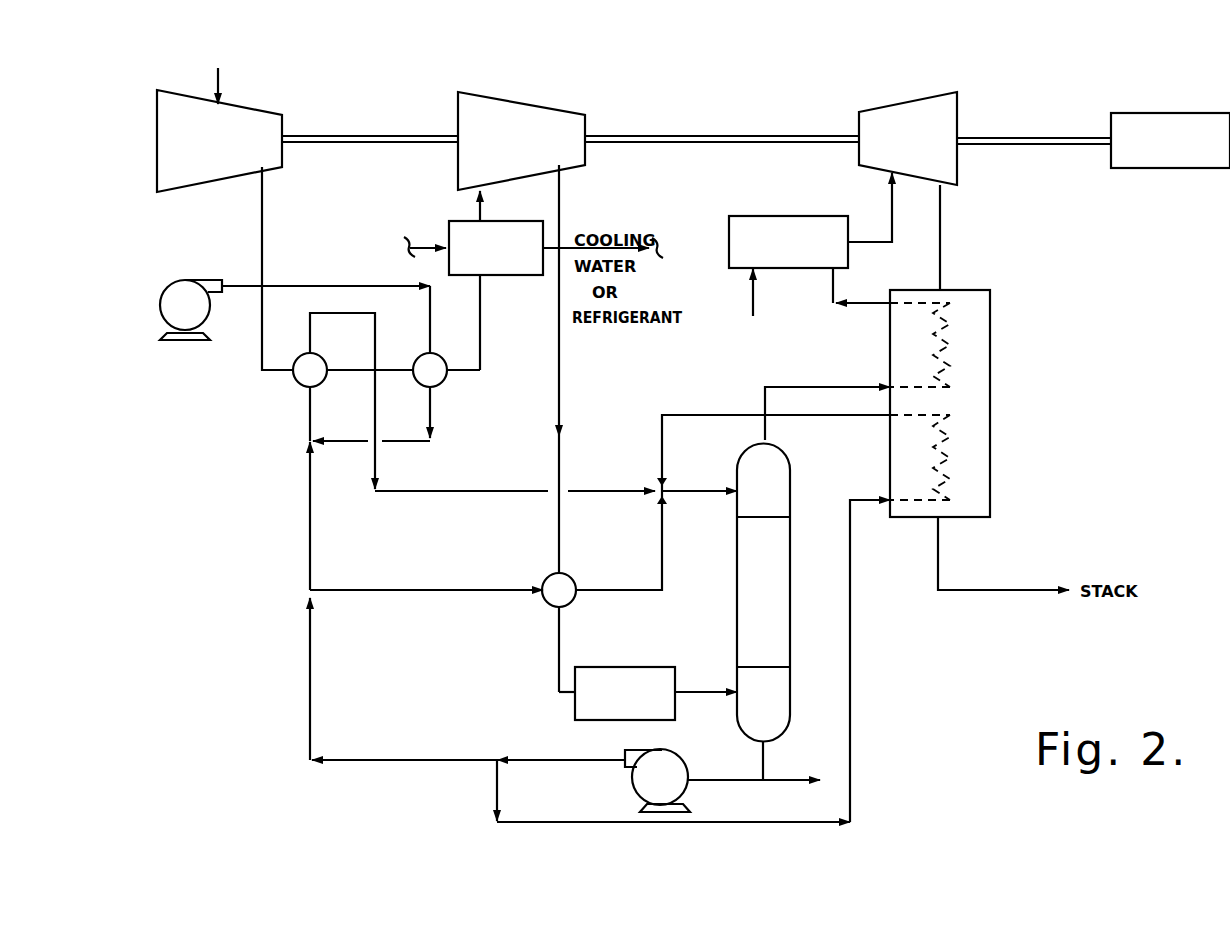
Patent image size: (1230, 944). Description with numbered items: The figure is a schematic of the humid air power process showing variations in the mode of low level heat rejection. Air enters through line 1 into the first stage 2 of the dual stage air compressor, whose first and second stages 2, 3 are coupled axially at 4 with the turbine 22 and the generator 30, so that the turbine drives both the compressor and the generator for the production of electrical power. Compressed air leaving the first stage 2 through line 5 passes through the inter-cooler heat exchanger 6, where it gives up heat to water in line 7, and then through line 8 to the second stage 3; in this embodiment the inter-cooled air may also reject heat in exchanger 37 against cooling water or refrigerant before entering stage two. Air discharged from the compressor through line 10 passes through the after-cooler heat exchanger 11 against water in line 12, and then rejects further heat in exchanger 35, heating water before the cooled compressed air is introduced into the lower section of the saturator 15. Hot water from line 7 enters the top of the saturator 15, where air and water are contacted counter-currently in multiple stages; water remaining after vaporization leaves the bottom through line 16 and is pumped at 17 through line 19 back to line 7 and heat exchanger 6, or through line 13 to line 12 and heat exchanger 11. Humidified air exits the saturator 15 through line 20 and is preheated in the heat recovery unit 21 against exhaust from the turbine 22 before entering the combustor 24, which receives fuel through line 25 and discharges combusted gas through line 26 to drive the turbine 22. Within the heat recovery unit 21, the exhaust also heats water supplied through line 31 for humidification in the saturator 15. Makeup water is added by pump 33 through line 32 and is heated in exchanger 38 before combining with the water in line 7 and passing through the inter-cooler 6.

The air line 1 is at (220, 82).
The first stage of the dual stage air compressor 2 is at (157, 104).
The second stage of the dual stage air compressor 3 is at (570, 110).
The axial coupling 4 is at (373, 136).
The line 5 is at (265, 208).
The heat exchanger 6 is at (300, 356).
The water line 7 is at (306, 452).
The line 8 is at (480, 213).
The line 10 is at (561, 384).
The heat exchanger 11 is at (572, 578).
The water line 12 is at (608, 600).
The line 13 is at (428, 590).
The saturator 15 is at (763, 593).
The line 16 is at (765, 759).
The pump 17 is at (676, 760).
The line 19 is at (310, 696).
The line 20 is at (810, 386).
The heat recovery unit 21 is at (993, 332).
The turbine 22 is at (906, 100).
The combustor 24 is at (796, 216).
The fuel line 25 is at (755, 306).
The line 26 is at (860, 244).
The generator 30 is at (1191, 113).
The water line 31 is at (853, 690).
The makeup water line 32 is at (372, 286).
The pump 33 is at (200, 282).
The exchanger 35 is at (658, 667).
The exchanger 37 is at (528, 278).
The exchanger 38 is at (424, 352).